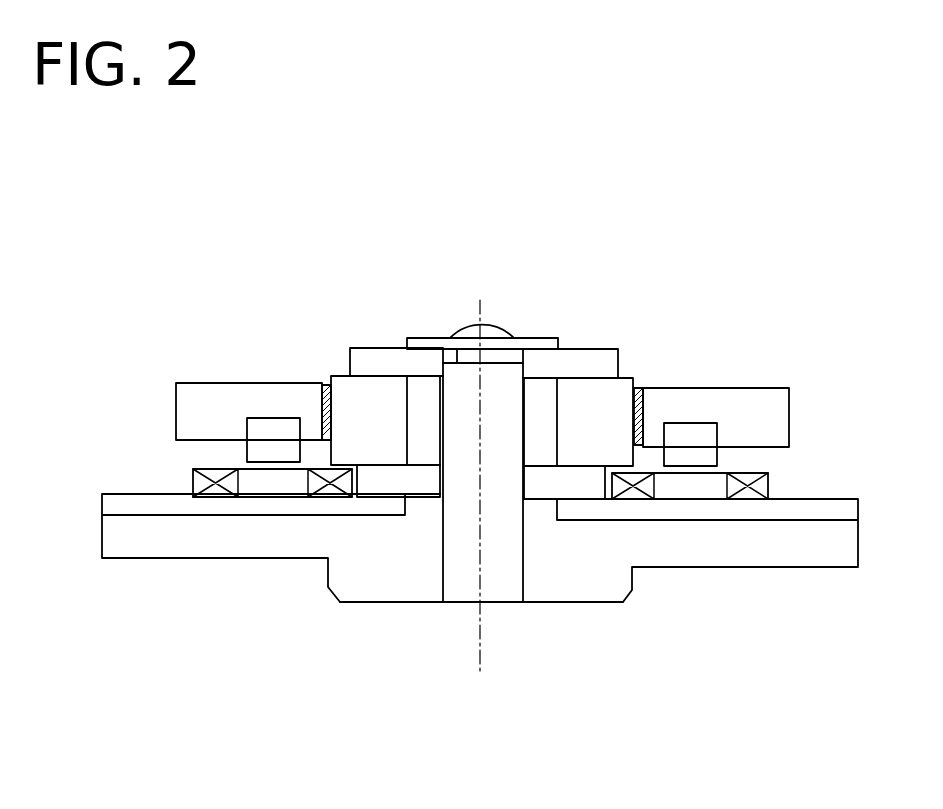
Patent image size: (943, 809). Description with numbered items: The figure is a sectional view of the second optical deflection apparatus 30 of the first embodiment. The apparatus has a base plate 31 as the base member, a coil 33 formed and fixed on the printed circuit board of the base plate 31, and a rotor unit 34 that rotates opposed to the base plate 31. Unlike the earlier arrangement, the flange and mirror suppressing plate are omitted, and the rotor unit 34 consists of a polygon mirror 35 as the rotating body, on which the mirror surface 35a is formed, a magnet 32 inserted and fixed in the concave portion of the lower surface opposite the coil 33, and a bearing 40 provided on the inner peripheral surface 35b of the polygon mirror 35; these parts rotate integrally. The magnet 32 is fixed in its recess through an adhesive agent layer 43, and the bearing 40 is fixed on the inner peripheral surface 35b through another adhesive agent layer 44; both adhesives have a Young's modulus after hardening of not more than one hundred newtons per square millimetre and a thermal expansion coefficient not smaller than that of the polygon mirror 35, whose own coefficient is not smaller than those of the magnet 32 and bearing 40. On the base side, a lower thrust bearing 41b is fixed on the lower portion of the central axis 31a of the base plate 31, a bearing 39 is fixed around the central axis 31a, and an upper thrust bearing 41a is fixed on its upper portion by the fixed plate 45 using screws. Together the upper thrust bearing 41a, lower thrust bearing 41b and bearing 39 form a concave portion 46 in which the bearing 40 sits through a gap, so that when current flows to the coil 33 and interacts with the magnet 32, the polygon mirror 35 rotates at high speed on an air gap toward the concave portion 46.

The optical deflection apparatus 30 is at (374, 312).
The base plate 31 is at (512, 566).
The central axis 31a is at (507, 387).
The magnet 32 is at (708, 455).
The coil 33 is at (772, 488).
The rotor unit 34 is at (238, 370).
The polygon mirror 35 is at (772, 400).
The mirror surface 35a is at (249, 427).
The inner peripheral surface 35b is at (323, 383).
The bearing 39 is at (422, 455).
The bearing 40 is at (623, 398).
The upper thrust bearing 41a is at (587, 362).
The lower thrust bearing 41b is at (595, 487).
The adhesive agent layer 43 is at (697, 421).
The adhesive agent layer 44 is at (645, 412).
The fixed plate 45 is at (423, 341).
The concave portion 46 is at (559, 433).